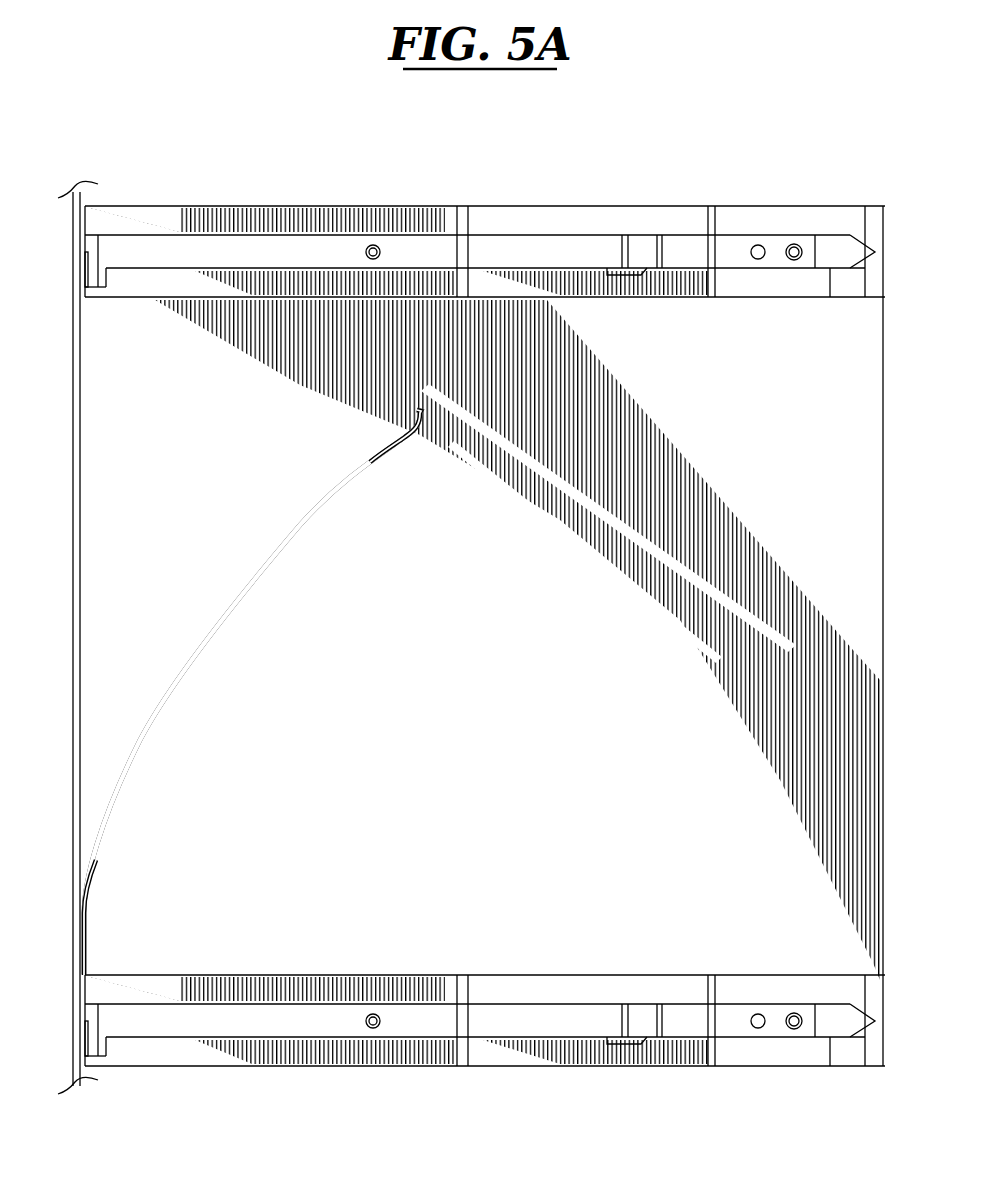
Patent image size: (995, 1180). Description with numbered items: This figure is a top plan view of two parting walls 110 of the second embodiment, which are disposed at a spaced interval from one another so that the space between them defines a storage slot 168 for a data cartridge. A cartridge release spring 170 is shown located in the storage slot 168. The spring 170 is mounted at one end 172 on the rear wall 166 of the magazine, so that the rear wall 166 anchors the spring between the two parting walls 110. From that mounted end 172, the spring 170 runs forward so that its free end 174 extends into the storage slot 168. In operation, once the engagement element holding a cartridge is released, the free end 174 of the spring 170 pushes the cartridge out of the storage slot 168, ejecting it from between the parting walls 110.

The parting wall 110 is at (795, 298).
The rear wall 166 is at (73, 478).
The storage slot 168 is at (600, 717).
The release spring 170 is at (290, 533).
The end 172 is at (84, 951).
The free end 174 is at (372, 468).